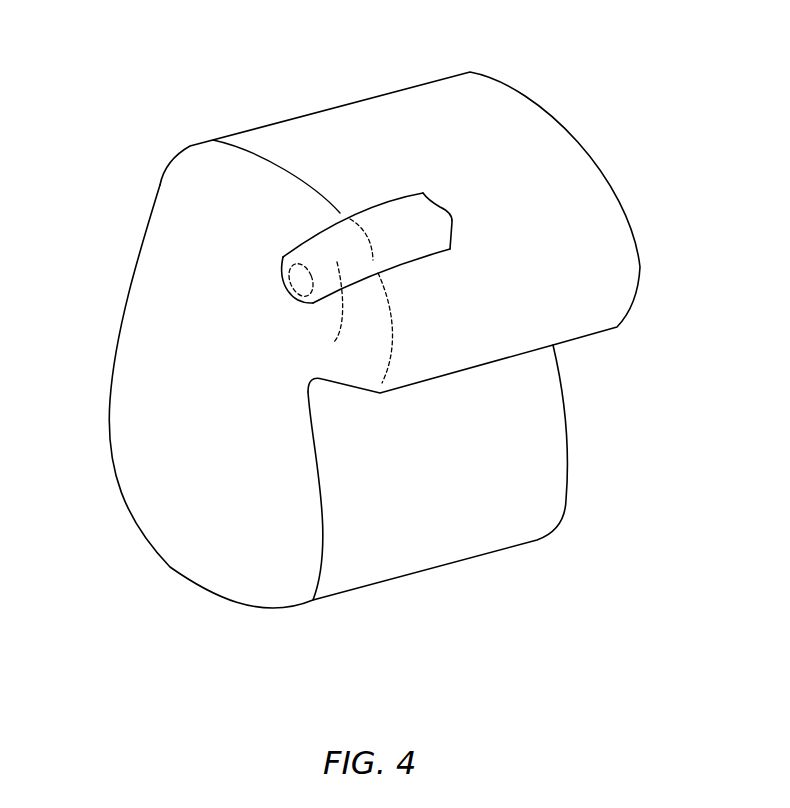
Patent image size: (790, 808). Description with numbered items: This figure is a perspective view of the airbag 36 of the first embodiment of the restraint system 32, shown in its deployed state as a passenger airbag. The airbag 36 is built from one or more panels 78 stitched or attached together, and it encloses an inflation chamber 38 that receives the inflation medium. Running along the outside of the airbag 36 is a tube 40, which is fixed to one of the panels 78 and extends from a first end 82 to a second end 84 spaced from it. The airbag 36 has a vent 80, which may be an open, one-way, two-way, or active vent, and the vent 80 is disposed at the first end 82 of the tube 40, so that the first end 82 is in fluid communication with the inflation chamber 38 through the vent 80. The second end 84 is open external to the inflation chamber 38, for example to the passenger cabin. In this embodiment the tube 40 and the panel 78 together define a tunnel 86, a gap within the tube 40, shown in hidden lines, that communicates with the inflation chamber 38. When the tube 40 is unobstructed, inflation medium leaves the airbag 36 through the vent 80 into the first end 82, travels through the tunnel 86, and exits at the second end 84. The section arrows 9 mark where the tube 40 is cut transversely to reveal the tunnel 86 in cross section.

The restraint system 32 is at (114, 54).
The airbag 36 is at (168, 567).
The inflation chamber 38 is at (240, 538).
The tube 40 is at (307, 240).
The panel 78 is at (313, 110).
The vent 80 is at (285, 290).
The first end 82 is at (277, 270).
The second end 84 is at (453, 217).
The tunnel 86 is at (334, 342).
The section line 9- 9 is at (367, 183).